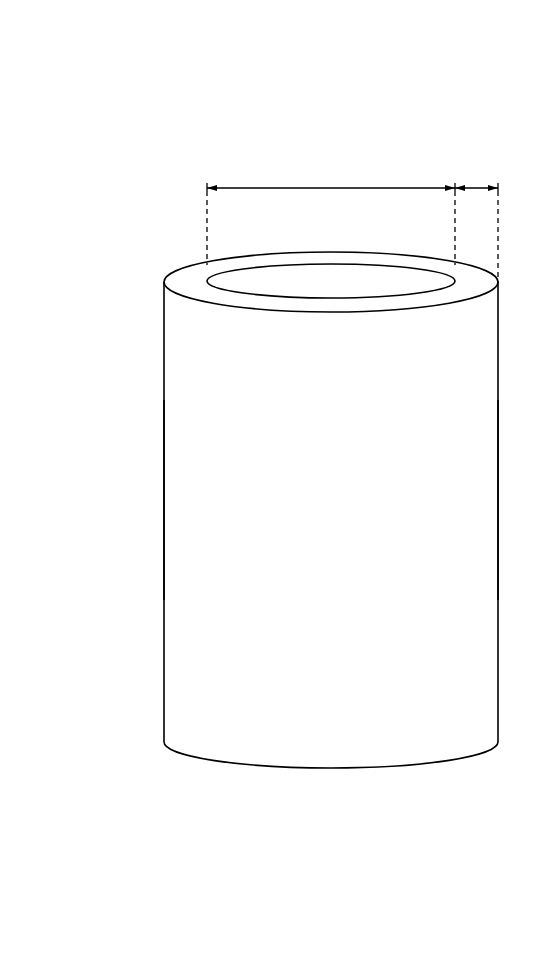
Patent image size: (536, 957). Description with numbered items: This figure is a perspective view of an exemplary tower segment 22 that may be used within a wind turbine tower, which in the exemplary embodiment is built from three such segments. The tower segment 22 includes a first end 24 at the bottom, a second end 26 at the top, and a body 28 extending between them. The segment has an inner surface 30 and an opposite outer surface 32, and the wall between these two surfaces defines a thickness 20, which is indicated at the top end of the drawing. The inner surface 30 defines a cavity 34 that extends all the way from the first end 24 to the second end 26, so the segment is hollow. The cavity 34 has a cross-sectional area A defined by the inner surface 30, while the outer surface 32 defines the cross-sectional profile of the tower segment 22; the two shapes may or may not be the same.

The thickness 20 is at (477, 185).
The tower segment 22 is at (153, 90).
The first end 24 is at (208, 760).
The second end 26 is at (465, 262).
The body 28 is at (146, 518).
The inner surface 30 is at (253, 283).
The outer surface 32 is at (342, 512).
The cavity 34 is at (375, 287).